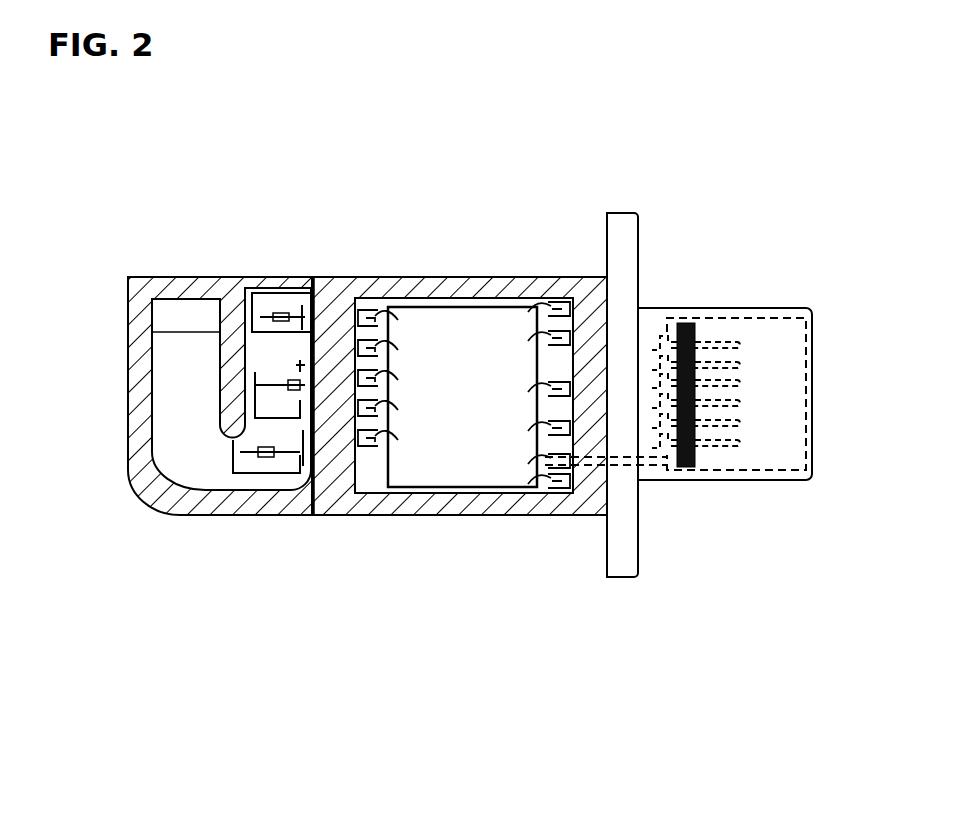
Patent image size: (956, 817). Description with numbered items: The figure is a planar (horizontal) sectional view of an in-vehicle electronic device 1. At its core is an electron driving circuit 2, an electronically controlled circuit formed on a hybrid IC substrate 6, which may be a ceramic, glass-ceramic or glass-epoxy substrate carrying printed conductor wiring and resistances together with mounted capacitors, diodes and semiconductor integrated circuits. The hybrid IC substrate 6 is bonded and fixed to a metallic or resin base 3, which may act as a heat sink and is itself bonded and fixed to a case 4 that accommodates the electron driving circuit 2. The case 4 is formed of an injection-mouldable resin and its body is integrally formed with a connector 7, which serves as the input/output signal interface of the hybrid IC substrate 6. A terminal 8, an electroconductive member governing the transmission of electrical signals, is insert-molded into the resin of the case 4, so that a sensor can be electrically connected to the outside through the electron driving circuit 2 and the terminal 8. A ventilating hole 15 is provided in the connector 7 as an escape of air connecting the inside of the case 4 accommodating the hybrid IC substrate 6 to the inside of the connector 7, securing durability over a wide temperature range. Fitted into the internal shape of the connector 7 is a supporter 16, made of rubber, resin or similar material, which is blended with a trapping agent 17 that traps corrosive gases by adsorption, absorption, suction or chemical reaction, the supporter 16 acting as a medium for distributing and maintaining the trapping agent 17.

The in-vehicle electronic device 1 is at (208, 262).
The electron driving circuit 2 is at (441, 327).
The base 3 is at (372, 480).
The case 4 is at (537, 277).
The hybrid IC substrate 6 is at (482, 450).
The connector 7 is at (773, 307).
The terminal 8 is at (723, 447).
The ventilating hole 15 is at (653, 465).
The supporter 16 is at (688, 297).
The trapping agent 17 is at (688, 312).